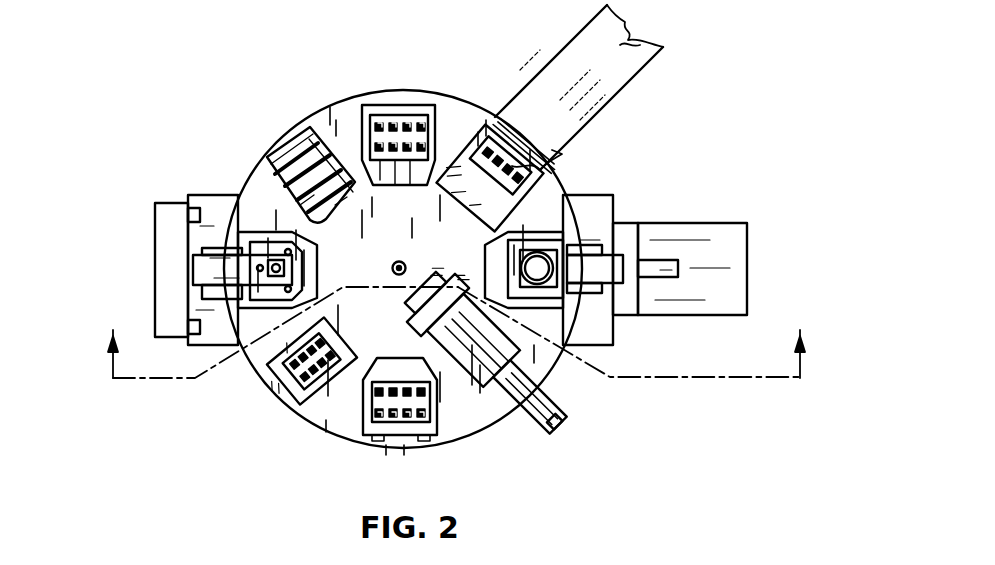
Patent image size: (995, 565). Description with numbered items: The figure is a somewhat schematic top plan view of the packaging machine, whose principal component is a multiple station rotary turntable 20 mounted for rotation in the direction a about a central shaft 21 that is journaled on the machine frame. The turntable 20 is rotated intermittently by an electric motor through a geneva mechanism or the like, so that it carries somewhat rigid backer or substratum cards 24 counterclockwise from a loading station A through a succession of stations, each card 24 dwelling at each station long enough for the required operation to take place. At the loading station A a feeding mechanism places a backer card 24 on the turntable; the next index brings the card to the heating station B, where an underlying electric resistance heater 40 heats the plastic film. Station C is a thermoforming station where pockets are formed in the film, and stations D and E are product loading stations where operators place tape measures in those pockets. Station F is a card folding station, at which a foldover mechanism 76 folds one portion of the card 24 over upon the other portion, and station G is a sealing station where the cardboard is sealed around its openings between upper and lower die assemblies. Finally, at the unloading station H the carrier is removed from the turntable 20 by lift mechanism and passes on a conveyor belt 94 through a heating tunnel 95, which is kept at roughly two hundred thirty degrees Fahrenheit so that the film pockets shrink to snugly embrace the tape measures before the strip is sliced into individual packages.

The rotary turntable 20 is at (455, 110).
The central shaft 21 is at (404, 263).
The backer card 24 is at (412, 114).
The electric resistance heater 40 is at (270, 167).
The foldover mechanism 76 is at (480, 394).
The conveyor belt 94 is at (548, 148).
The heating tunnel 95 is at (632, 46).
The loading station A is at (391, 105).
The heating station B is at (290, 137).
The thermoforming station C is at (252, 325).
The product loading station D is at (279, 393).
The product loading station E is at (405, 441).
The card folding station F is at (537, 376).
The sealing station G is at (582, 241).
The unloading station H is at (519, 141).
The direction of rotation a is at (344, 457).